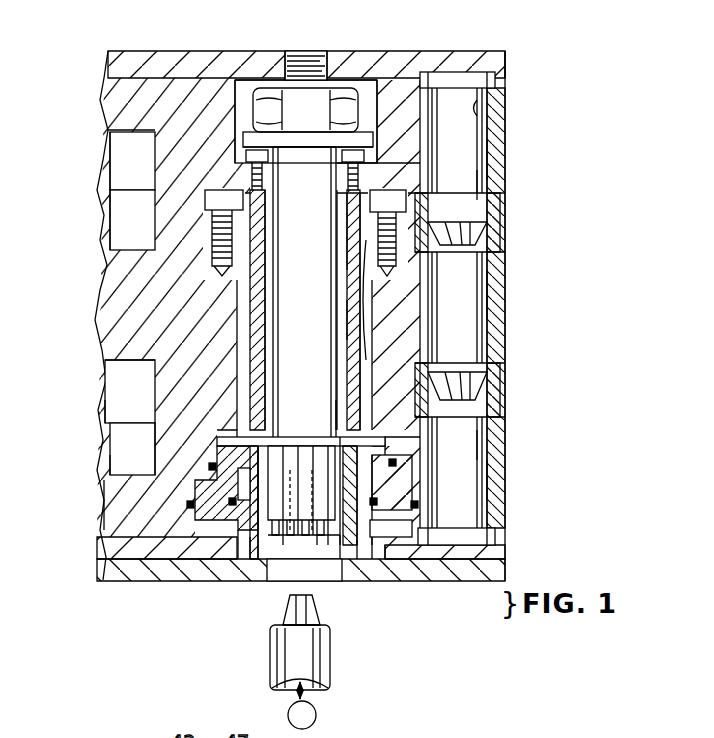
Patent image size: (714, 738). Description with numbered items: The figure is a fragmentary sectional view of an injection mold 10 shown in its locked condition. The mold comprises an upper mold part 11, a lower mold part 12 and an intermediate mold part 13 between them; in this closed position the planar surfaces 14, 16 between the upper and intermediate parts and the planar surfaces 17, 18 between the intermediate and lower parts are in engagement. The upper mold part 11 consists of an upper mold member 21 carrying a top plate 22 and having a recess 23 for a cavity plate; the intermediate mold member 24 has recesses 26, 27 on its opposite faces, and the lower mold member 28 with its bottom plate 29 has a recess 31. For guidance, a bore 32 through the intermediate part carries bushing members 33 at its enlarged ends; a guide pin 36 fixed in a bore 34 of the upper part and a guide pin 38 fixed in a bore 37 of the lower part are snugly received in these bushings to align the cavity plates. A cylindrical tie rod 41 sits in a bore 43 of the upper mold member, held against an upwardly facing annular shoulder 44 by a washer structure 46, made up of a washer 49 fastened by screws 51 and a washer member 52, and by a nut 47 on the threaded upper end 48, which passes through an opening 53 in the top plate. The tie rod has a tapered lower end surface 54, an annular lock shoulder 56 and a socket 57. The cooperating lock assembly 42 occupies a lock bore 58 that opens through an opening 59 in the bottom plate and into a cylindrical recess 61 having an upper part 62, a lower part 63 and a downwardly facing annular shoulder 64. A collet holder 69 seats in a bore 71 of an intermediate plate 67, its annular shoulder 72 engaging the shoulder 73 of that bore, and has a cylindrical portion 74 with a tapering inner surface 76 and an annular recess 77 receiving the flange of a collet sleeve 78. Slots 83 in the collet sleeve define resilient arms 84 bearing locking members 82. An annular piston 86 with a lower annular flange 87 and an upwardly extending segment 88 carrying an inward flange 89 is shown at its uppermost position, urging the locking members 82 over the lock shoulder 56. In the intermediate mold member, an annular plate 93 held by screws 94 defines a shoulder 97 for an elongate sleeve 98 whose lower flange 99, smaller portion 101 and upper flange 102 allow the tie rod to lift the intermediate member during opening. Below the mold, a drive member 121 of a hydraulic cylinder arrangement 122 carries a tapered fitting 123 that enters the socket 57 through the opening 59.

The injection mold 10 is at (530, 80).
The upper mold part 11 is at (492, 125).
The lower mold part 12 is at (497, 485).
The intermediate mold part 13 is at (490, 293).
The planar surface 14 is at (110, 160).
The planar surface 16 is at (110, 215).
The planar surface 17 is at (110, 395).
The planar surface 18 is at (110, 440).
The upper mold member 21 is at (496, 157).
The top plate 22 is at (473, 70).
The recess 23 is at (140, 140).
The intermediate mold member 24 is at (112, 288).
The recess 26 is at (110, 250).
The recess 27 is at (110, 372).
The lower mold member 28 is at (110, 500).
The bottom plate 29 is at (110, 572).
The recess 31 is at (110, 468).
The bore 32 is at (478, 330).
The bushing member 33 is at (490, 213).
The bore 34 is at (481, 108).
The guide pin 36 is at (478, 185).
The bore 37 is at (478, 515).
The guide pin 38 is at (478, 445).
The tie rod 41 is at (302, 296).
The lock assembly 42 is at (292, 547).
The bore 43 is at (250, 76).
The annular shoulder 44 is at (304, 174).
The washer structure 46 is at (364, 124).
The nut 47 is at (289, 99).
The threaded upper end 48 is at (322, 60).
The washer 49 is at (346, 158).
The screw 51 is at (366, 182).
The washer member 52 is at (295, 135).
The opening 53 is at (305, 50).
The tapered lower end surface 54 is at (326, 547).
The lock shoulder 56 is at (292, 440).
The socket 57 is at (296, 547).
The lock bore 58 is at (335, 415).
The opening 59 is at (350, 550).
The cylindrical recess 61 is at (215, 482).
The upper part 62 is at (220, 460).
The lower part 63 is at (210, 560).
The annular shoulder 64 is at (222, 560).
The intermediate plate 67 is at (110, 548).
The collet holder 69 is at (368, 550).
The bore 71 is at (377, 562).
The annular shoulder 72 is at (394, 562).
The annular shoulder 73 is at (242, 560).
The cylindrical portion 74 is at (250, 555).
The inner surface 76 is at (376, 491).
The annular recess 77 is at (262, 555).
The collet sleeve 78 is at (320, 552).
The locking member 82 is at (235, 433).
The slot 83 is at (304, 570).
The arm 84 is at (226, 502).
The annular piston 86 is at (410, 488).
The annular flange 87 is at (405, 508).
The segment 88 is at (395, 458).
The flange 89 is at (338, 395).
The annular plate 93 is at (218, 228).
The screw 94 is at (221, 195).
The shoulder 97 is at (377, 282).
The sleeve 98 is at (350, 318).
The flange 99 is at (385, 303).
The portion 101 is at (346, 250).
The flange 102 is at (346, 208).
The drive member 121 is at (331, 665).
The hydraulic cylinder arrangement 122 is at (319, 715).
The tapered fitting 123 is at (293, 632).